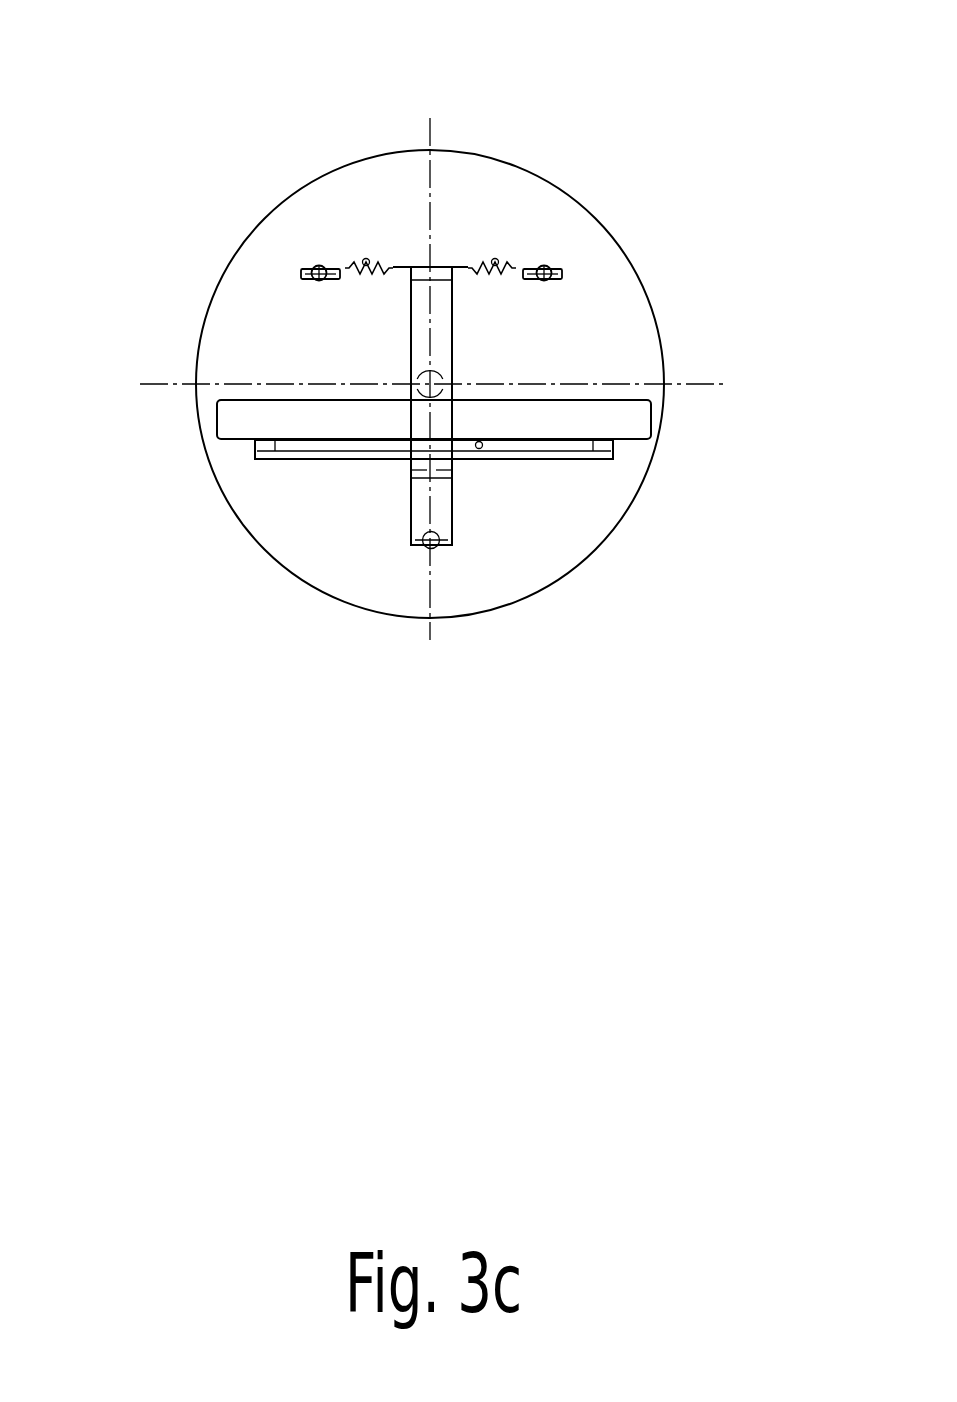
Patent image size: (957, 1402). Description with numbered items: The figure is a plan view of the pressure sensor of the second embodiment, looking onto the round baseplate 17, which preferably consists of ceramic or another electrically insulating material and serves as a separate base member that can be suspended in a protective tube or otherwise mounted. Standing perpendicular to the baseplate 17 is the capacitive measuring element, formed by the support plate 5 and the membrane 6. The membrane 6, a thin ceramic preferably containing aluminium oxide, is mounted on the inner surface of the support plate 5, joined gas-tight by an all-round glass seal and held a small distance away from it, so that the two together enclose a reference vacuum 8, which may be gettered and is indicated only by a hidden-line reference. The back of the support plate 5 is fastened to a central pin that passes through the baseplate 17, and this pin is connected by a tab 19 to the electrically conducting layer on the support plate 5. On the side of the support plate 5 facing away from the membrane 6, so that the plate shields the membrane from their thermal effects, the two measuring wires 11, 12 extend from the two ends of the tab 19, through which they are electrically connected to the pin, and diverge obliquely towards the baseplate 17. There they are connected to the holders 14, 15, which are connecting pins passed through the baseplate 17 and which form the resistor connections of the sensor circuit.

The support plate 5 is at (524, 441).
The membrane 6 is at (425, 559).
The reference vacuum 8 is at (555, 560).
The measuring wire 11 is at (548, 137).
The measuring wire 12 is at (314, 137).
The holder 14 is at (676, 198).
The holder 15 is at (191, 200).
The baseplate 17 is at (513, 384).
The tab 19 is at (255, 393).